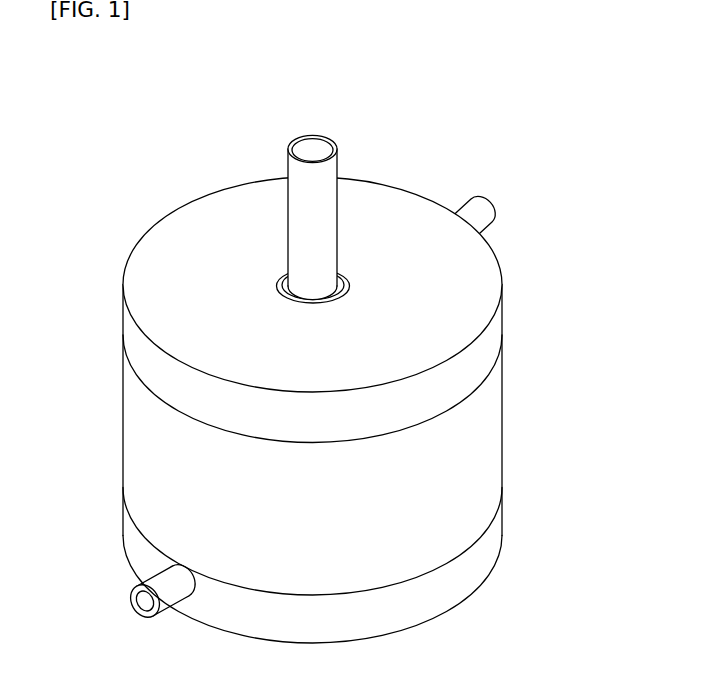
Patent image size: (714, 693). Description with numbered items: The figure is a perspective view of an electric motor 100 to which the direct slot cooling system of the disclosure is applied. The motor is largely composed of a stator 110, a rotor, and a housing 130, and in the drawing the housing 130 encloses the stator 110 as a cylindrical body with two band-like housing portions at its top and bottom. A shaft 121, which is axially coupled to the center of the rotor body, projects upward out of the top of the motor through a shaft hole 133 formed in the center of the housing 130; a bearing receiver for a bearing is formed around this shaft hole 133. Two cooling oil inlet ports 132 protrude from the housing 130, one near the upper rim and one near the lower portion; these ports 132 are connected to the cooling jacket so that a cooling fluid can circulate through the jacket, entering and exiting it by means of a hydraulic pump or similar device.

The apparatus 100 is at (294, 70).
The stator 110 is at (503, 436).
The shaft 121 is at (318, 143).
The housing 130 is at (503, 313).
The cooling oil inlet port 132 is at (481, 213).
The shaft hole 133 is at (338, 270).